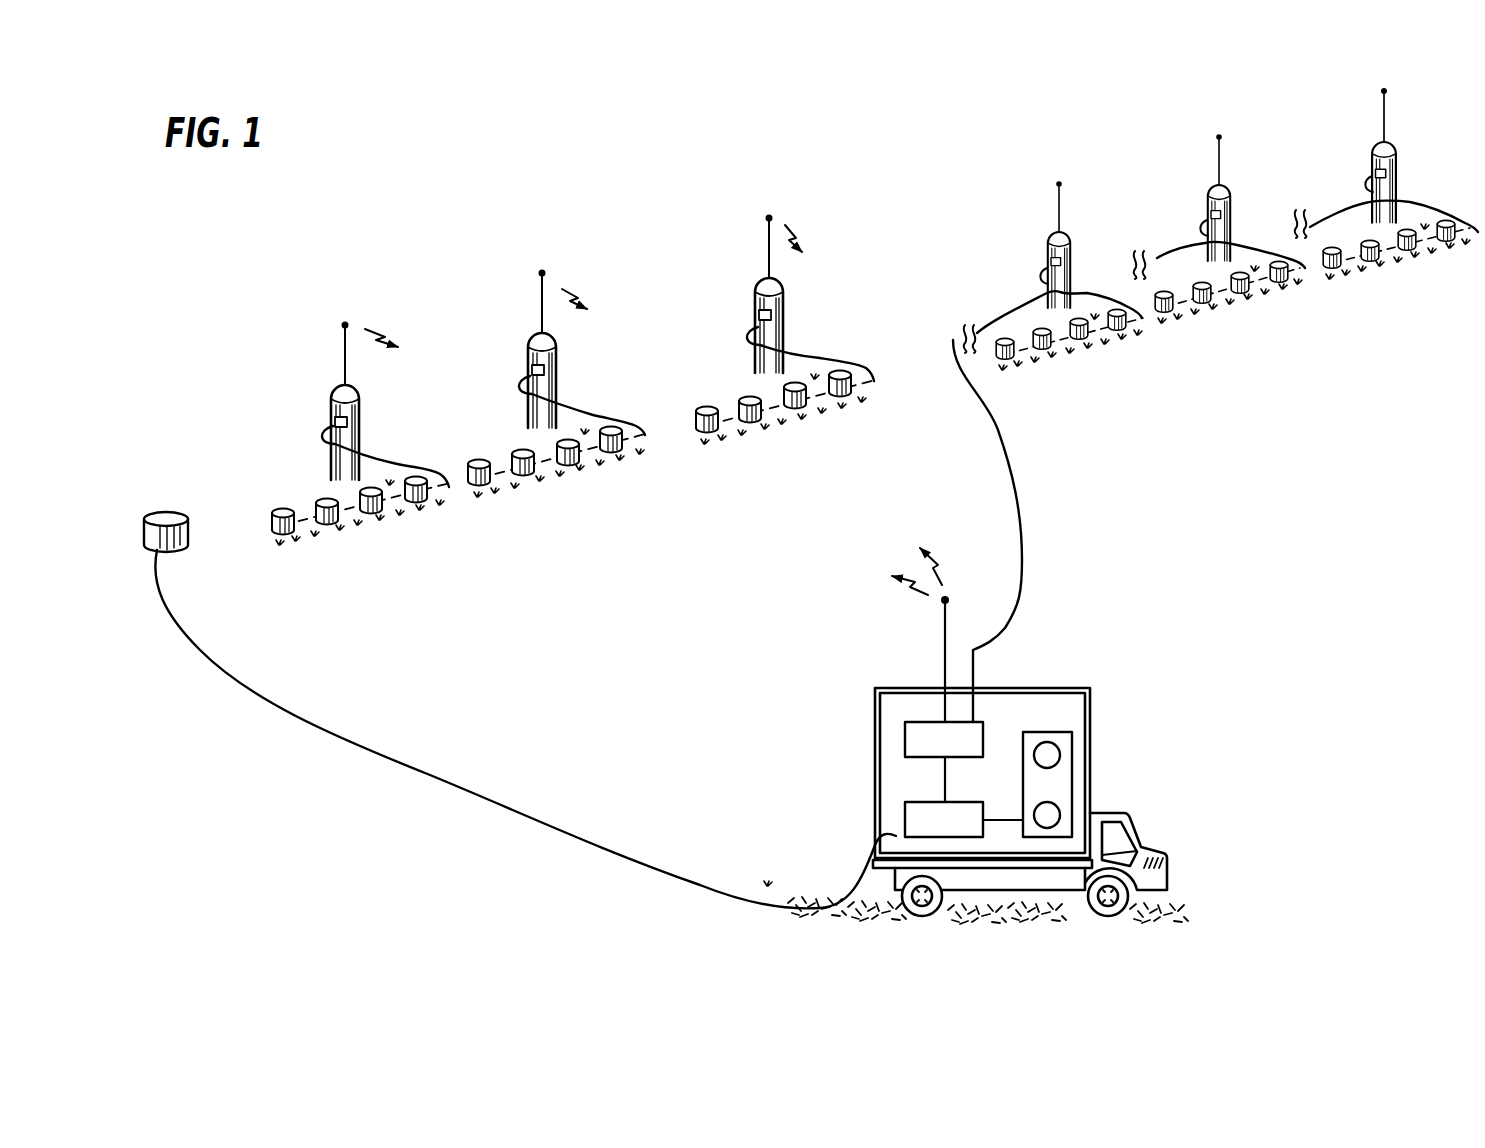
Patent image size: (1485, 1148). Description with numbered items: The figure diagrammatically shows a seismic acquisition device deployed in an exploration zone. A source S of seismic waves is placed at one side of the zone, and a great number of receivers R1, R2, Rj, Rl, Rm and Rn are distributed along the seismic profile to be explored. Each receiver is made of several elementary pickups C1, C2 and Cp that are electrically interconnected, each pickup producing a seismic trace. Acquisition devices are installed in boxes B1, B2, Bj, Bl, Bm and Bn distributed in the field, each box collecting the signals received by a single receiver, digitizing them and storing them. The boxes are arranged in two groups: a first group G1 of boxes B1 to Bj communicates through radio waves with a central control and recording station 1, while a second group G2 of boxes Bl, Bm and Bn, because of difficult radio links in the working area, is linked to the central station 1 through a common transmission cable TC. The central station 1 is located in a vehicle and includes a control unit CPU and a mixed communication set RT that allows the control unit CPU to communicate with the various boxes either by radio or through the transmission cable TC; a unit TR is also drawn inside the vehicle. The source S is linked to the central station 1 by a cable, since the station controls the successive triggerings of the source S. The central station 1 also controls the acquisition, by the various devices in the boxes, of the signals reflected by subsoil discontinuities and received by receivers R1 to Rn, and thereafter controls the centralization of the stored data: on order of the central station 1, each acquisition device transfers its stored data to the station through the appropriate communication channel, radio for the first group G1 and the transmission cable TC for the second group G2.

The central control and recording station 1 is at (1101, 706).
The first group of boxes G1 is at (300, 302).
The second group of boxes G2 is at (983, 175).
The acquisition box B1 is at (336, 394).
The acquisition box B2 is at (534, 342).
The acquisition box Bj is at (760, 288).
The acquisition box Bl is at (1043, 244).
The acquisition box Bm is at (1194, 197).
The acquisition box Bn is at (1366, 155).
The elementary pickup C1 is at (283, 508).
The elementary pickup C2 is at (321, 498).
The elementary pickup Cp is at (413, 474).
The receiver R1 is at (401, 548).
The receiver R2 is at (598, 497).
The receiver Rj is at (826, 445).
The receiver Rl is at (1104, 370).
The receiver Rm is at (1264, 327).
The receiver Rn is at (1433, 284).
The source of seismic waves S is at (167, 500).
The transmission cable TC is at (1022, 606).
The mixed communication set RT is at (944, 739).
The control unit CPU is at (944, 819).
The tape recorder TR is at (1047, 784).